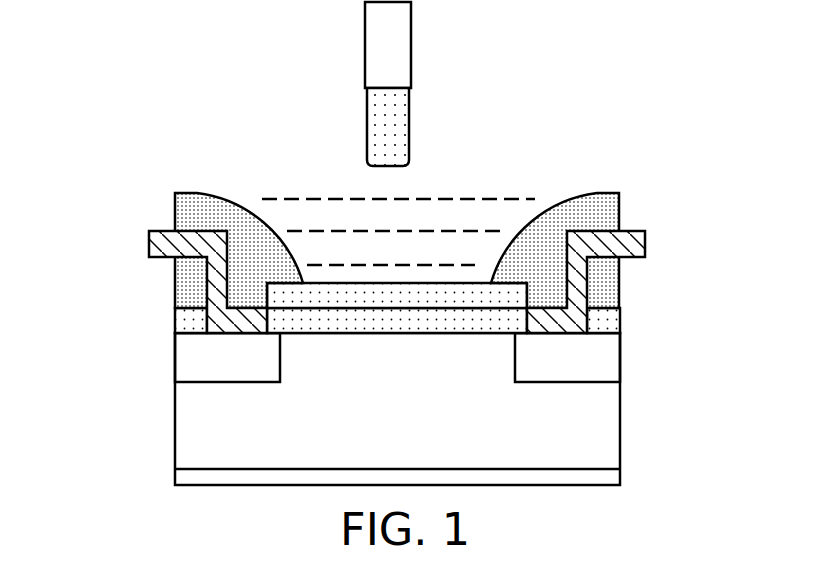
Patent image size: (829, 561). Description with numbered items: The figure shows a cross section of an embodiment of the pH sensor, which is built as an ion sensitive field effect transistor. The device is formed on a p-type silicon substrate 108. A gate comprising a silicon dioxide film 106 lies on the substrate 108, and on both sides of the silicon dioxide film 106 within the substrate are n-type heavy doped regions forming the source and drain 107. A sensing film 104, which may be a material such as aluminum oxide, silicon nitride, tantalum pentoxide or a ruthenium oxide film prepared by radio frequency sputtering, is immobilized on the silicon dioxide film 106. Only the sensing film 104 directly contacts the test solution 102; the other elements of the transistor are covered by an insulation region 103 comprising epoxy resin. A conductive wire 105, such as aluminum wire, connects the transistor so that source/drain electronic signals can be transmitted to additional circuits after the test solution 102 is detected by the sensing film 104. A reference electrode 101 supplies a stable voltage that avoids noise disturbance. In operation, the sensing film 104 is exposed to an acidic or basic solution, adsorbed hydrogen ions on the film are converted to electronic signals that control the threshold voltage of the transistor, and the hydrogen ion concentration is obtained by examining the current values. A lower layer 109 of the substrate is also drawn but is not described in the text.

The reference electrode 101 is at (405, 44).
The test solution 102 is at (330, 240).
The insulation region 103 is at (604, 210).
The sensing film 104 is at (285, 295).
The conductive wire 105 is at (148, 242).
The silicon dioxide film 106 is at (500, 322).
The n-type heavy doped regions (source/drain) 107 is at (207, 372).
The p-type silicon substrate 108 is at (377, 437).
The substrate bottom layer / buffer layer 109 is at (619, 476).